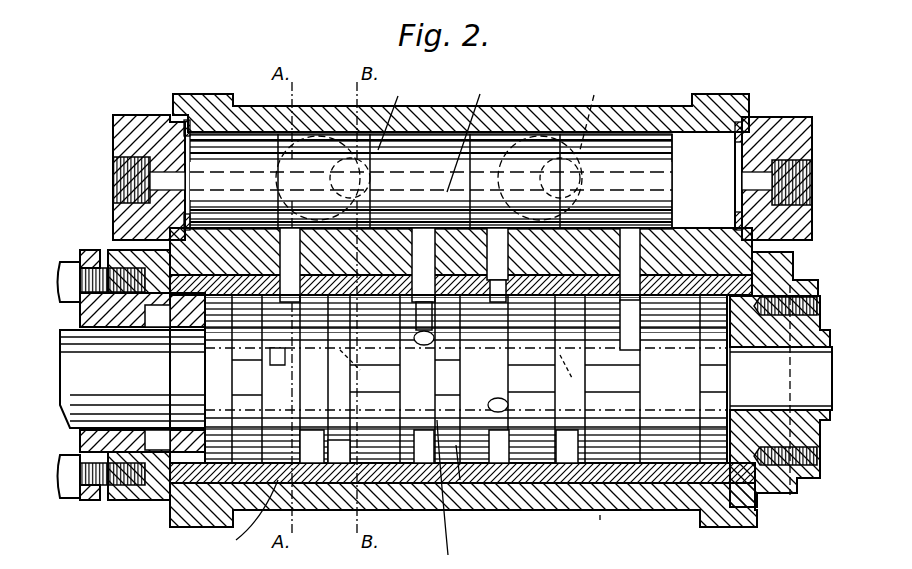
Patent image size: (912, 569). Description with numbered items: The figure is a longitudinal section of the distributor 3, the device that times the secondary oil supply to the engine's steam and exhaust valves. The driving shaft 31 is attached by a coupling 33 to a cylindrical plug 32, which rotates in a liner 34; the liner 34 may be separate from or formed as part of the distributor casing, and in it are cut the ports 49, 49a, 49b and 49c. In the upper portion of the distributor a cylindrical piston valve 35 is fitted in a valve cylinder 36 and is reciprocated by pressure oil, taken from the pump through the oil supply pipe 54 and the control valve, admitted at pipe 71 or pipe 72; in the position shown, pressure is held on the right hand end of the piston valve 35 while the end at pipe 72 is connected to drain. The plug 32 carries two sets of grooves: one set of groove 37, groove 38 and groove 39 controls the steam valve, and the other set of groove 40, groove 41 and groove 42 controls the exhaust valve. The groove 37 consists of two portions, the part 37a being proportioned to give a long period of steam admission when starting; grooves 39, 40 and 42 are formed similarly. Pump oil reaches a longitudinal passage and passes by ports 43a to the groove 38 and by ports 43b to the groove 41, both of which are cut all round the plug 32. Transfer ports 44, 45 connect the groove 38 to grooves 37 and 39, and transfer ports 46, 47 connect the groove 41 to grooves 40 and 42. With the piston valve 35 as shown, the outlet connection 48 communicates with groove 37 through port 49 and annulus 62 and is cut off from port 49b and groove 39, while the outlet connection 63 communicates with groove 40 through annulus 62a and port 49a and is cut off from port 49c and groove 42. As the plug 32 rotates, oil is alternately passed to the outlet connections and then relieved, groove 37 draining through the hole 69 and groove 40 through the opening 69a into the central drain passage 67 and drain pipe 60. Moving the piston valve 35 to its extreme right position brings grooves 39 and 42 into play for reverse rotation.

The distributor 3 is at (607, 522).
The driving shaft 31 is at (132, 379).
The cylindrical plug 32 is at (467, 379).
The coupling 33 is at (228, 500).
The liner 34 is at (456, 484).
The piston valve 35 is at (431, 181).
The valve cylinder 36 is at (220, 98).
The groove 37 is at (280, 232).
The groove portion 37a is at (253, 518).
The groove 38 is at (392, 440).
The groove 39 is at (449, 494).
The groove 40 is at (500, 464).
The groove 41 is at (567, 464).
The groove 42 is at (630, 390).
The ports 43a is at (330, 358).
The ports 43b is at (544, 369).
The transfer port 44 is at (333, 468).
The transfer port 45 is at (424, 440).
The transfer port 46 is at (505, 300).
The transfer port 47 is at (592, 330).
The outlet connection 48 is at (398, 113).
The port 49 is at (307, 265).
The port 49a is at (440, 279).
The port 49b is at (467, 129).
The port 49c is at (640, 256).
The oil supply pipe 54 is at (740, 280).
The drain pipe 60 is at (781, 390).
The annulus 62 is at (305, 142).
The annulus 62a is at (524, 150).
The outlet connection 63 is at (596, 107).
The central drain passage 67 is at (458, 400).
The hole 69 is at (272, 344).
The opening 69a is at (508, 412).
The pipe 71 is at (790, 160).
The pipe 72 is at (118, 170).